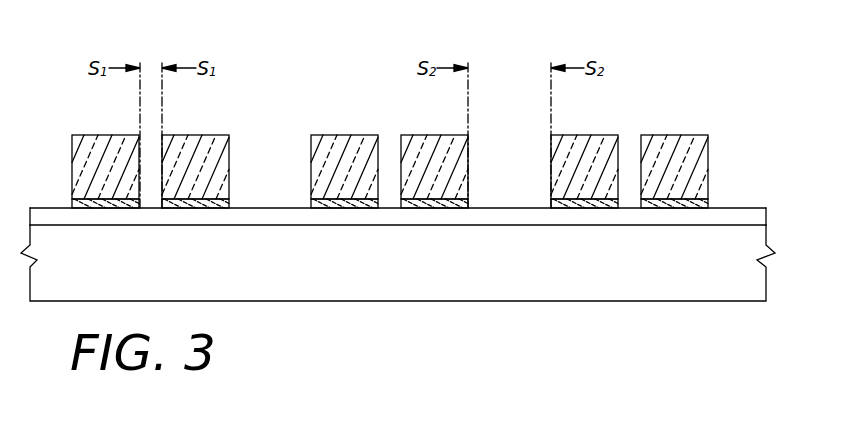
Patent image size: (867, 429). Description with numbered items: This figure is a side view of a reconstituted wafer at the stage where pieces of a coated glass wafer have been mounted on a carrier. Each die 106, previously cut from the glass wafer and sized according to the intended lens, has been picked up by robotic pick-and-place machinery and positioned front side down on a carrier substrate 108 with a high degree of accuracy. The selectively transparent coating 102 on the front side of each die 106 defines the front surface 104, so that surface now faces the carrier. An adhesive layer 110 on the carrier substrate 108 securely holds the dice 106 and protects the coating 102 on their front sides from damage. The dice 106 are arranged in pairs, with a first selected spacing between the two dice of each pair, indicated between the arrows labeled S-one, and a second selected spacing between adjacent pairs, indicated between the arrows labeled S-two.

The selectively transparent coating 102 is at (470, 202).
The front surface 104 is at (435, 208).
The die 106 is at (207, 143).
The carrier substrate 108 is at (602, 282).
The adhesive layer 110 is at (737, 213).